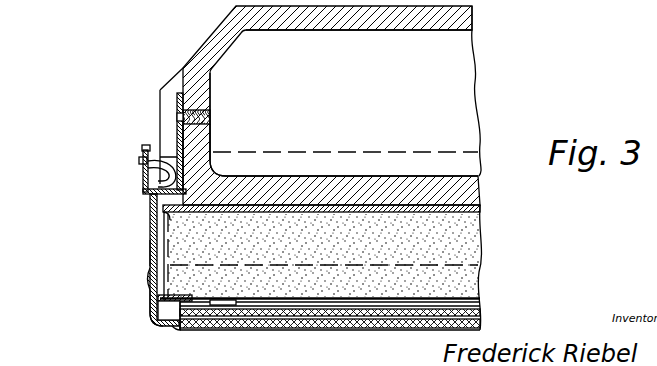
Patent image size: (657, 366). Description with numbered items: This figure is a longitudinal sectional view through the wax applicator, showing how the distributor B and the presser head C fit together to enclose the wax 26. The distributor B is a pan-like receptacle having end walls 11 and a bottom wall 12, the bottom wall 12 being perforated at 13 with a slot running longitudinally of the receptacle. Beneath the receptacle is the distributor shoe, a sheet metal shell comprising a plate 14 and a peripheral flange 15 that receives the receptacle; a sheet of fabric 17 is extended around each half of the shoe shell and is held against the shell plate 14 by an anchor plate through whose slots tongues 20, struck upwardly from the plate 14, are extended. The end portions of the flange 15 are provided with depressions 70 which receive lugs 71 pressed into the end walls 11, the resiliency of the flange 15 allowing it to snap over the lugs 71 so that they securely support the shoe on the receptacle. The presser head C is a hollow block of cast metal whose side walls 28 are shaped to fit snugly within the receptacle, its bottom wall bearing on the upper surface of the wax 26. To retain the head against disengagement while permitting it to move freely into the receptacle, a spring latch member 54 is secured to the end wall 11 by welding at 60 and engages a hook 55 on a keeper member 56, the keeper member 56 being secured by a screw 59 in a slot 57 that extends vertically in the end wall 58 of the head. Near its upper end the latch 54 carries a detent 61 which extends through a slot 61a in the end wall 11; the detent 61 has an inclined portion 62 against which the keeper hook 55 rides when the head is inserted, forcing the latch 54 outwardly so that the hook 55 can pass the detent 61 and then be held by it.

The keeper member 56 is at (164, 104).
The slot 57 is at (168, 121).
The slot 61a is at (149, 146).
The inclined portion 62 is at (139, 160).
The detent 61 is at (150, 179).
The end walls 11 is at (150, 197).
The distributor member B is at (150, 216).
The spring latch member 54 is at (150, 222).
The welding 60 is at (150, 256).
The depressions 70 is at (148, 276).
The lugs 71 is at (150, 284).
The bottom wall 12 is at (157, 312).
The peripheral flange 15 is at (151, 318).
The plate 14 is at (173, 328).
The tongues 20 is at (237, 305).
The sheet of fabric 17 is at (328, 328).
The slot 13 is at (481, 292).
The wax 26 is at (481, 219).
The side walls 28 is at (474, 82).
The presser head C is at (372, 30).
The hook 55 is at (216, 177).
The end wall 58 is at (212, 137).
The screw 59 is at (212, 115).